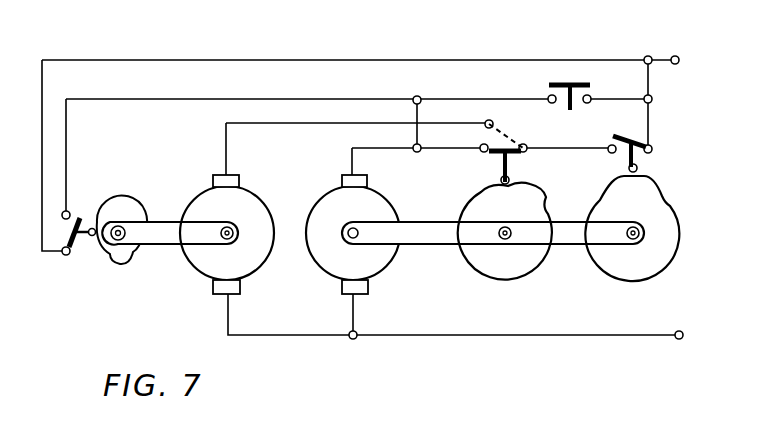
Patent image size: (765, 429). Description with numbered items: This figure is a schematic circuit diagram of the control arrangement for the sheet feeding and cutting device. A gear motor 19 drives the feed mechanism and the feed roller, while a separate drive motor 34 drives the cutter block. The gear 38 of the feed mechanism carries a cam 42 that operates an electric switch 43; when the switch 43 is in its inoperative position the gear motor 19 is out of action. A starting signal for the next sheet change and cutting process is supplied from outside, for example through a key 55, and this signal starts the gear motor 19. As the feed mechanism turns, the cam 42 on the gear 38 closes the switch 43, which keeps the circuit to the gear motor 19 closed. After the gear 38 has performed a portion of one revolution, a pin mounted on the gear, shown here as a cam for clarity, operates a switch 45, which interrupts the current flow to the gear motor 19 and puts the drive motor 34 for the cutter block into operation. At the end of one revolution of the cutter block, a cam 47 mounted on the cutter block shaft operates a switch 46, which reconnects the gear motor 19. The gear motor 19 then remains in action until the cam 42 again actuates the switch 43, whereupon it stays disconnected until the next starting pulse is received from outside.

The switch 46 is at (85, 208).
The cam 47 is at (128, 216).
The drive motor 34 is at (207, 258).
The gear motor 19 is at (372, 205).
The switch 45 is at (513, 123).
The key 55 is at (576, 104).
The switch 43 is at (624, 150).
The cam 42 is at (642, 219).
The gear 38 is at (577, 242).